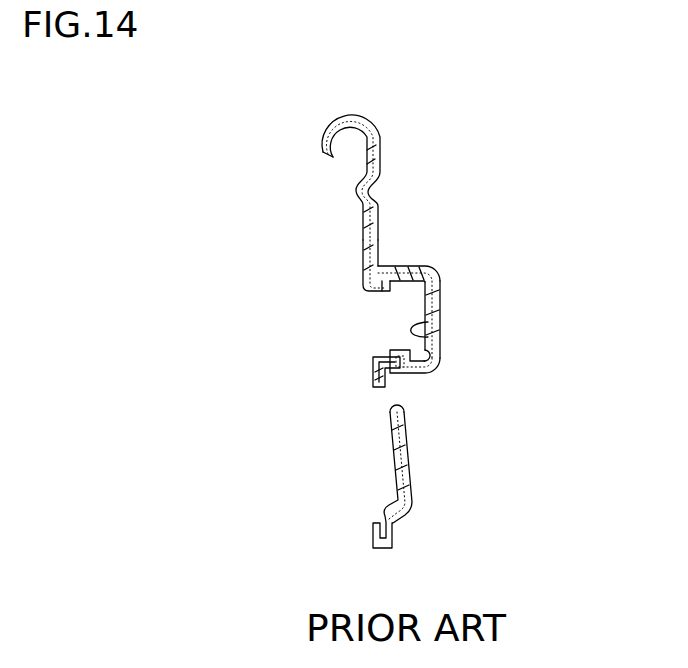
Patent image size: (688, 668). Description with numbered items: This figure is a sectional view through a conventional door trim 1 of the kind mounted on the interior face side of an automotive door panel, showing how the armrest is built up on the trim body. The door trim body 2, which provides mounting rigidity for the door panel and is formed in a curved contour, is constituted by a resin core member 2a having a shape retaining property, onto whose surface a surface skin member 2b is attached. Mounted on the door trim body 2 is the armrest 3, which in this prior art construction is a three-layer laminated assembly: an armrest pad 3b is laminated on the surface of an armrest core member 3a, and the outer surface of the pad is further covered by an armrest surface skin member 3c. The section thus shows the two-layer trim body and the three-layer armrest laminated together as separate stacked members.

The door trim 1 is at (413, 154).
The door trim body 2 is at (273, 208).
The surface skin member 2b is at (373, 232).
The resin core member 2a is at (368, 261).
The armrest 3 is at (442, 361).
The armrest surface skin member 3c is at (436, 282).
The armrest pad 3b is at (436, 308).
The armrest core member 3a is at (440, 337).